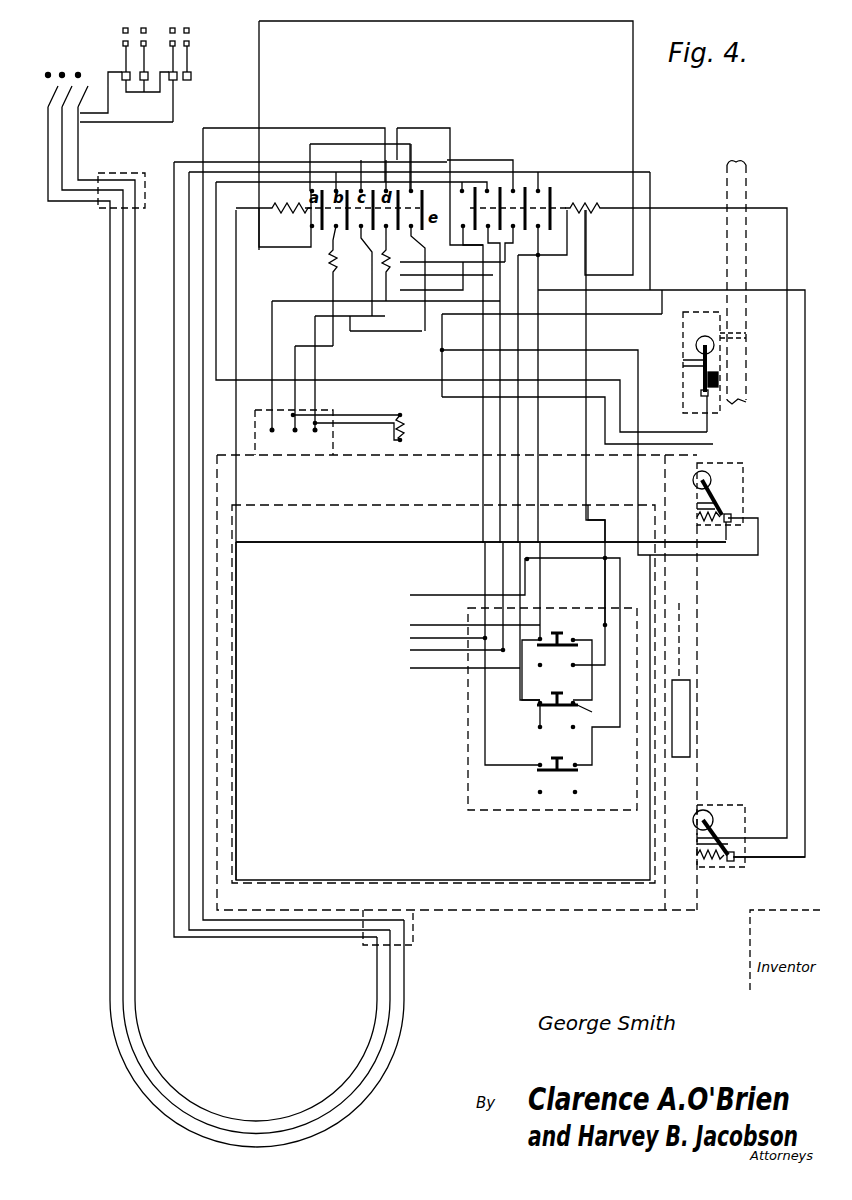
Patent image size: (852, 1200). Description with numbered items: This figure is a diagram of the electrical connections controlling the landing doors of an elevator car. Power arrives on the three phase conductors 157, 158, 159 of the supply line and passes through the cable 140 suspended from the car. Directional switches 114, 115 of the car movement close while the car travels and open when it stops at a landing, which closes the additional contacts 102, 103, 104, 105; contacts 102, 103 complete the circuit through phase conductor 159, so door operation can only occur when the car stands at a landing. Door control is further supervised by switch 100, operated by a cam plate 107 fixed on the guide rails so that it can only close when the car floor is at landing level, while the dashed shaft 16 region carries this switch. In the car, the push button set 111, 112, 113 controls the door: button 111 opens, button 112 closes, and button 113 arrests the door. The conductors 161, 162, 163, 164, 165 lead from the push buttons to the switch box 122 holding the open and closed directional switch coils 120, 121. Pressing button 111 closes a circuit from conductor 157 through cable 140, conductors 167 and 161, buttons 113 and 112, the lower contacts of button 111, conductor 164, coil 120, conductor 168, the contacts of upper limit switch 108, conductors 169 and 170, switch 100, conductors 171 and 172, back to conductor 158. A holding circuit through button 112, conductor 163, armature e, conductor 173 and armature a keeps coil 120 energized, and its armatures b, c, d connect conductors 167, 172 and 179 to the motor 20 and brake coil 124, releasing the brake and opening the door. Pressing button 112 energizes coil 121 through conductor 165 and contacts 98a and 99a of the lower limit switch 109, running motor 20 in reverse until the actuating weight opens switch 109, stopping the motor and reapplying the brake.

The shaft 16 is at (740, 190).
The motor 20 is at (296, 455).
The contact of limit switch 109 98a is at (730, 866).
The contact of limit switch 109 99a is at (740, 862).
The switch 100 is at (690, 396).
The contact 102 is at (126, 84).
The contact 103 is at (178, 84).
The contact 104 is at (148, 76).
The contact 105 is at (191, 77).
The cam plate 107 is at (730, 348).
The upper limit switch 108 is at (735, 490).
The lower limit switch 109 is at (740, 820).
The push button 111 is at (558, 650).
The push button 112 is at (548, 710).
The push button 113 is at (535, 778).
The directional switch 114 is at (138, 28).
The directional switch 115 is at (196, 31).
The open directional switch coil 120 is at (274, 219).
The closed directional switch coil 121 is at (586, 216).
The switch box 122 is at (443, 455).
The brake coil 124 is at (406, 425).
The cable 140 is at (218, 1130).
The phase conductor 157 is at (48, 74).
The phase conductor 158 is at (62, 70).
The phase conductor 159 is at (78, 72).
The conductor 161 is at (428, 126).
The conductor 162 is at (545, 582).
The conductor 163 is at (500, 572).
The conductor 164 is at (633, 120).
The conductor 165 is at (615, 585).
The conductor 167 is at (300, 126).
The conductor 168 is at (236, 318).
The conductor 169 is at (597, 350).
The conductor 170 is at (554, 400).
The conductor 171 is at (218, 274).
The conductor 172 is at (278, 158).
The conductor 173 is at (348, 144).
The phase conductor 179 is at (206, 156).